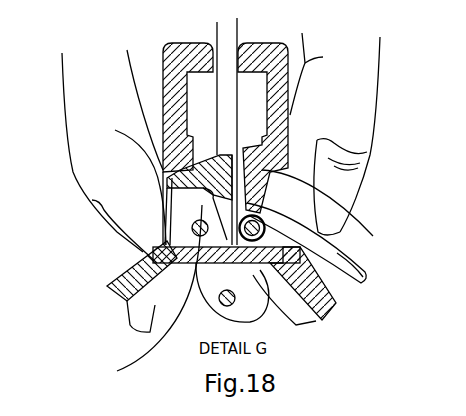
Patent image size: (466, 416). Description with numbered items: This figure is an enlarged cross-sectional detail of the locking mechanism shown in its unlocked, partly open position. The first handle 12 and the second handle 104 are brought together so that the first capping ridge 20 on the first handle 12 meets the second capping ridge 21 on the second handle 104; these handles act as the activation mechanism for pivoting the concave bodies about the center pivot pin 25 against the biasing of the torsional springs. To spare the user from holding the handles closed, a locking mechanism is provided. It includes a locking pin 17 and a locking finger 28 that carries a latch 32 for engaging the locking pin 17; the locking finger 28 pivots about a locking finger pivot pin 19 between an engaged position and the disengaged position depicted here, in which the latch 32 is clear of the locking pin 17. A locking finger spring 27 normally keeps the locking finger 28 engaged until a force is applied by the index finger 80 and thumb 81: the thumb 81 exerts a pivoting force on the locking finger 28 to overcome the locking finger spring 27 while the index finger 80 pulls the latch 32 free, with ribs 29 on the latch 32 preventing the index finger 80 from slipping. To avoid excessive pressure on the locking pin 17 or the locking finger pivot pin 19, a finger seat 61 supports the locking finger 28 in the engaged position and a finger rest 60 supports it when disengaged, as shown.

The first handle 12 is at (284, 43).
The locking pin 17 is at (145, 295).
The locking finger pivot pin 19 is at (346, 254).
The first capping ridge 20 is at (237, 22).
The second capping ridge 21 is at (217, 25).
The center pivot pin 25 is at (258, 312).
The locking finger spring 27 is at (281, 202).
The locking finger 28 is at (130, 325).
The ribs 29 is at (165, 172).
The latch 32 is at (112, 248).
The finger rest 60 is at (292, 277).
The finger seat 61 is at (240, 270).
The index finger 80 is at (93, 168).
The thumb 81 is at (368, 127).
The second handle 104 is at (167, 53).